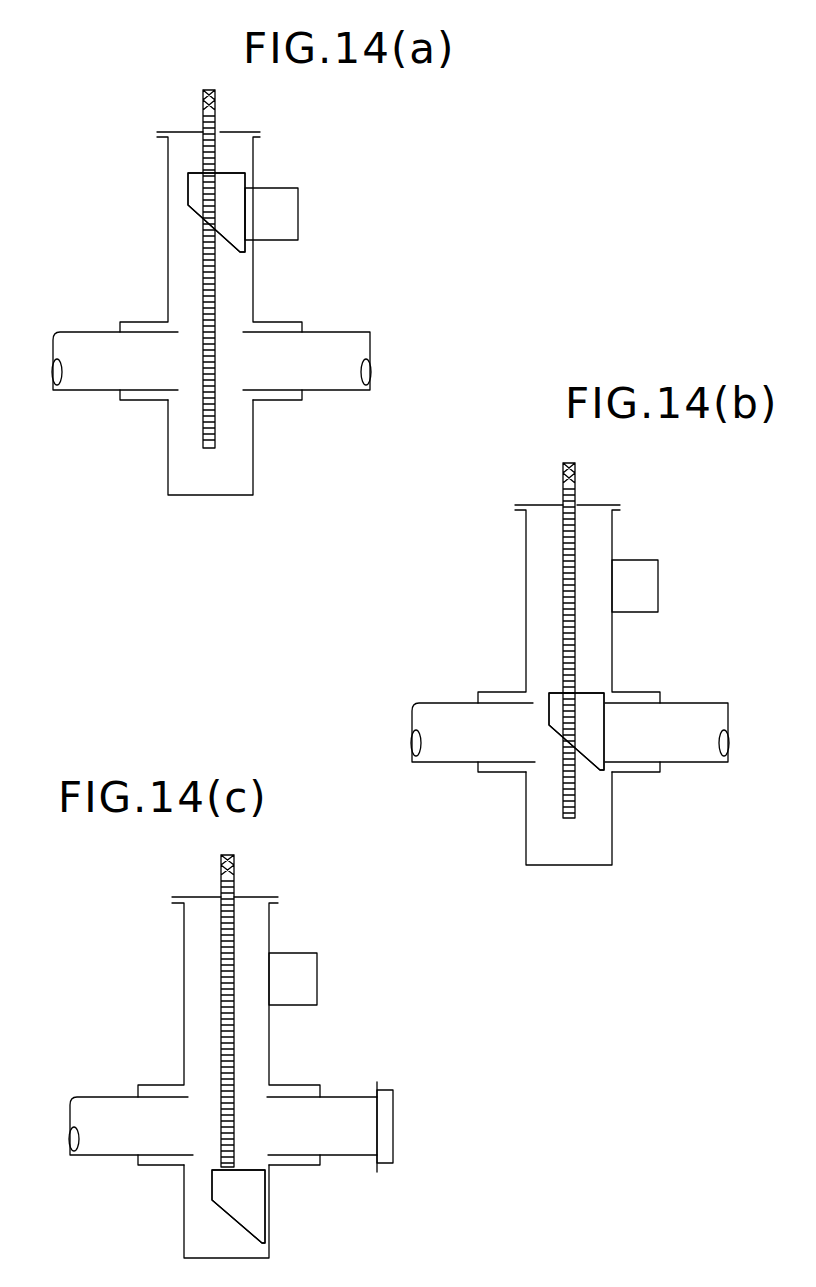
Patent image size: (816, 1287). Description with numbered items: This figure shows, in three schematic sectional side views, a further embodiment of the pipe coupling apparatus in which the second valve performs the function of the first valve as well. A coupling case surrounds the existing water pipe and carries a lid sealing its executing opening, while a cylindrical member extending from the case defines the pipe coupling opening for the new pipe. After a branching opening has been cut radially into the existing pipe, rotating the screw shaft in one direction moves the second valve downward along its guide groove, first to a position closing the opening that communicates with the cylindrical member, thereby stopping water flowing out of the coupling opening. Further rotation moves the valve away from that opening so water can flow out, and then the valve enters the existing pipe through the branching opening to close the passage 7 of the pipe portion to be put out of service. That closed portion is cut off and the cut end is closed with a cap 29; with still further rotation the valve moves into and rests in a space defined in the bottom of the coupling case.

The passage 7 is at (637, 735).
The cap 29 is at (393, 1123).